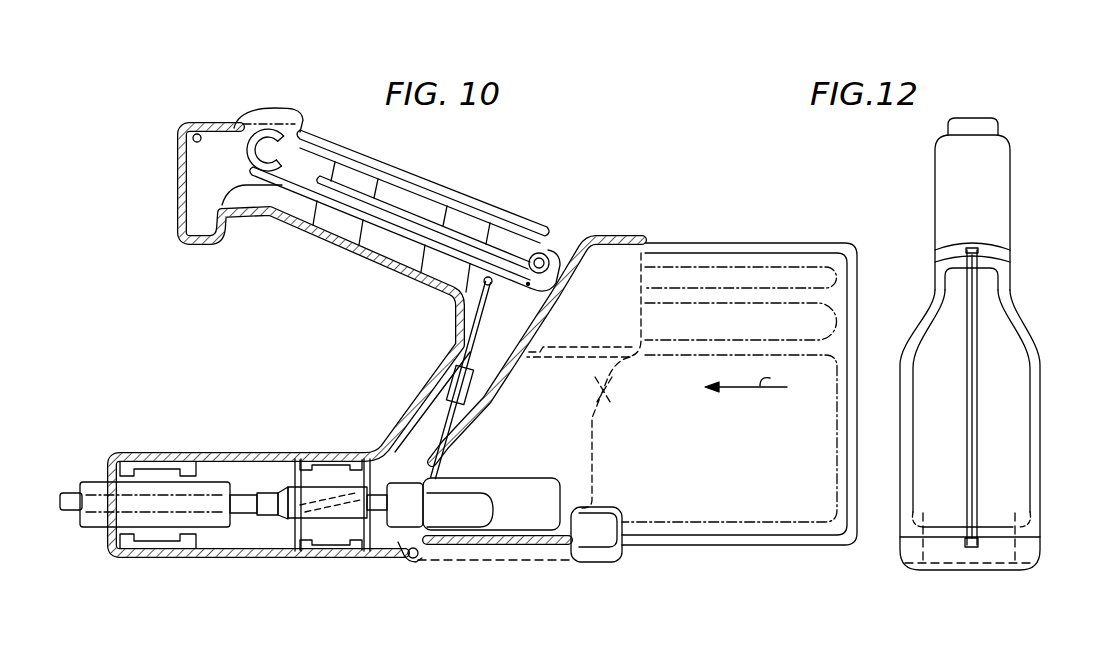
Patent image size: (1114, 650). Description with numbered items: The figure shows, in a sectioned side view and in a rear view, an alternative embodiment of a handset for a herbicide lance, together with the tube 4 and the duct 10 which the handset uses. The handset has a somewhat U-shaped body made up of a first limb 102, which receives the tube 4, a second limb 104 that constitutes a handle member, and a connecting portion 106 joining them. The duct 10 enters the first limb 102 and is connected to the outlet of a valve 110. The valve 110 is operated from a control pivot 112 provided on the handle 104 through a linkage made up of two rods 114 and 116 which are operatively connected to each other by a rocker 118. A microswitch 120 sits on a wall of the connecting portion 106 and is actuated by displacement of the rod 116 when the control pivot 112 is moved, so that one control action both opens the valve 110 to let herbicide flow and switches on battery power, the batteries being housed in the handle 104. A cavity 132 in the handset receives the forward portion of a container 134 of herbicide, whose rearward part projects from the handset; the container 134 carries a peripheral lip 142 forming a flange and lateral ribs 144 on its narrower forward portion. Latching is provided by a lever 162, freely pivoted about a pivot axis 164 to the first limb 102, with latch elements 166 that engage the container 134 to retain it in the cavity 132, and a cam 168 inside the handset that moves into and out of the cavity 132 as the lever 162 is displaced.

In FIG. 10, the tube 4 is at (100, 520).
In FIG. 10, the duct 10 is at (72, 493).
In FIG. 10, the first limb 102 is at (255, 455).
In FIG. 10, the second limb 104 is at (400, 160).
In FIG. 12, the second limb 104 is at (943, 172).
In FIG. 10, the connecting portion 106 is at (430, 388).
In FIG. 10, the valve 110 is at (300, 505).
In FIG. 10, the control pivot 112 is at (292, 112).
In FIG. 12, the control pivot 112 is at (960, 118).
In FIG. 10, the rod 114 is at (350, 215).
In FIG. 10, the rod 116 is at (442, 427).
In FIG. 12, the rod 116 is at (971, 397).
In FIG. 10, the rocker 118 is at (512, 250).
In FIG. 10, the microswitch 120 is at (470, 385).
In FIG. 10, the cavity 132 is at (612, 398).
In FIG. 10, the container 134 is at (790, 500).
In FIG. 12, the container 134 is at (1035, 368).
In FIG. 10, the peripheral lip 142 is at (793, 245).
In FIG. 10, the lateral ribs 144 is at (592, 348).
In FIG. 10, the lever 162 is at (560, 562).
In FIG. 12, the lever 162 is at (1000, 572).
In FIG. 10, the pivot axis 164 is at (413, 560).
In FIG. 10, the latch elements 166 is at (600, 520).
In FIG. 12, the latch elements 166 is at (895, 538).
In FIG. 10, the cam 168 is at (425, 487).